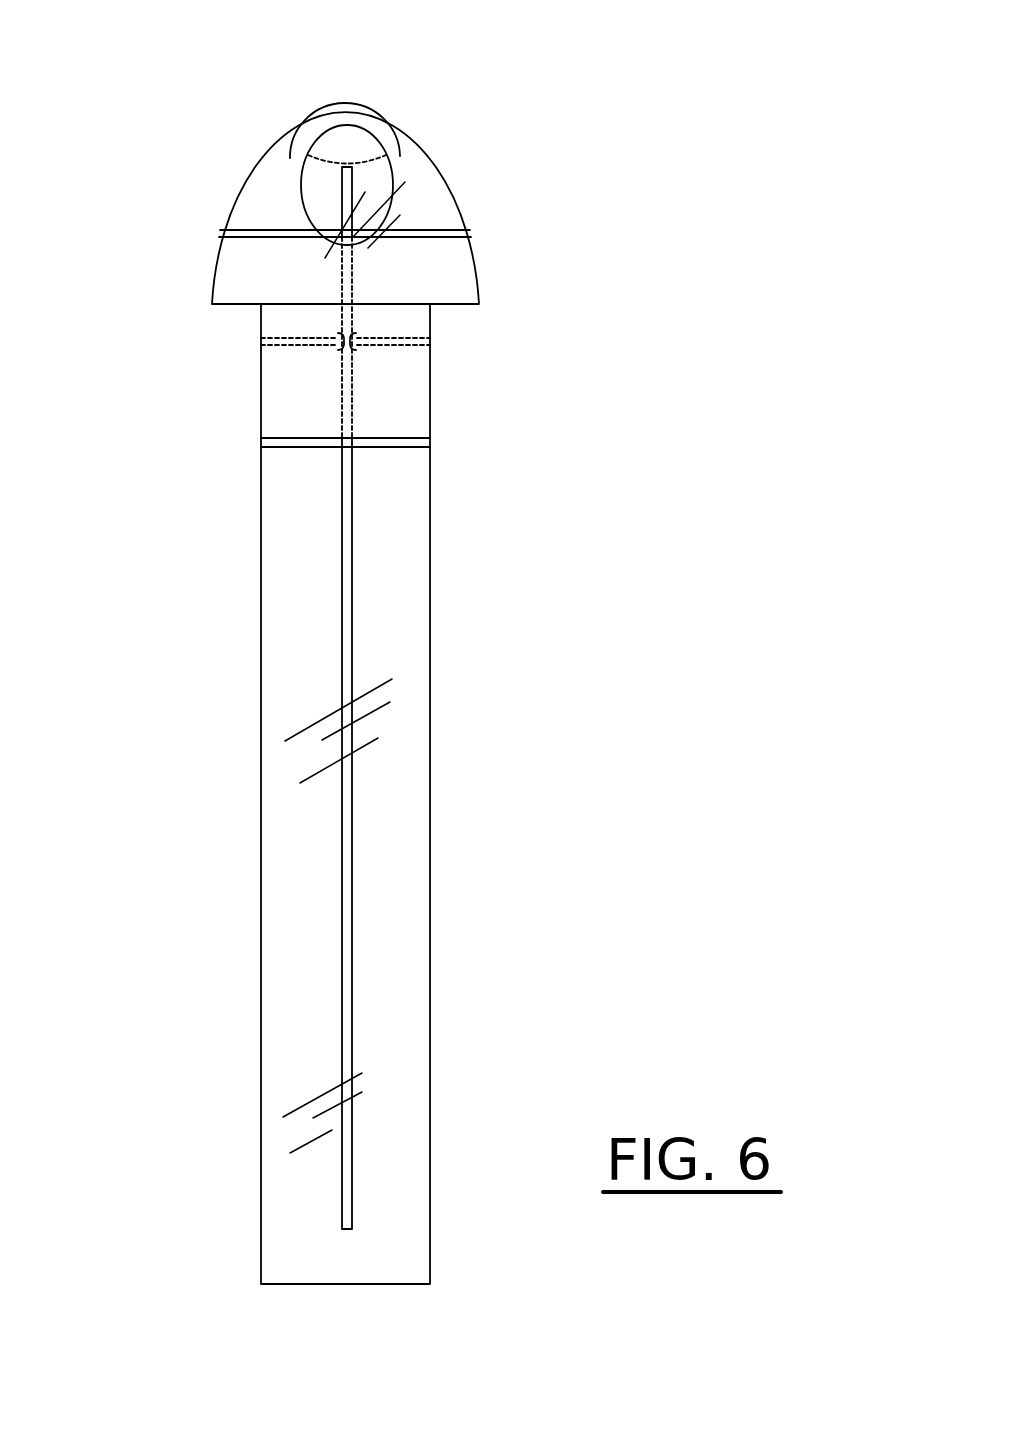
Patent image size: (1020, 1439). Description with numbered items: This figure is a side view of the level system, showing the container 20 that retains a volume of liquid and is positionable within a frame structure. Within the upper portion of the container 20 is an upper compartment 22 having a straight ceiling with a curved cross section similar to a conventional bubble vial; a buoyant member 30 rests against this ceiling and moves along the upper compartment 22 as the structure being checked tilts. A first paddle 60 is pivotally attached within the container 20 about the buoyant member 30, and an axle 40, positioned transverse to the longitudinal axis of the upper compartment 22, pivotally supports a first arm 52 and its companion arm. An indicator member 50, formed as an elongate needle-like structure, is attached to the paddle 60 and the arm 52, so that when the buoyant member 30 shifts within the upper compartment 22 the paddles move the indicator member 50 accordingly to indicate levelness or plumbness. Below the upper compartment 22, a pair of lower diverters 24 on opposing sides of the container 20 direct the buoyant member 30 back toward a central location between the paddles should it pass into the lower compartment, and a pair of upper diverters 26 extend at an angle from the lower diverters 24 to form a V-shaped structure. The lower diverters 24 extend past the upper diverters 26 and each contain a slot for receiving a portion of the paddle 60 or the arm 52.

The container 20 is at (384, 645).
The upper compartment 22 is at (270, 133).
The lower diverters 24 is at (295, 420).
The upper diverters 26 is at (245, 273).
The buoyant member 30 is at (398, 122).
The axle 40 is at (292, 347).
The indicator member 50 is at (345, 507).
The first arm 52 is at (349, 197).
The first paddle 60 is at (317, 183).